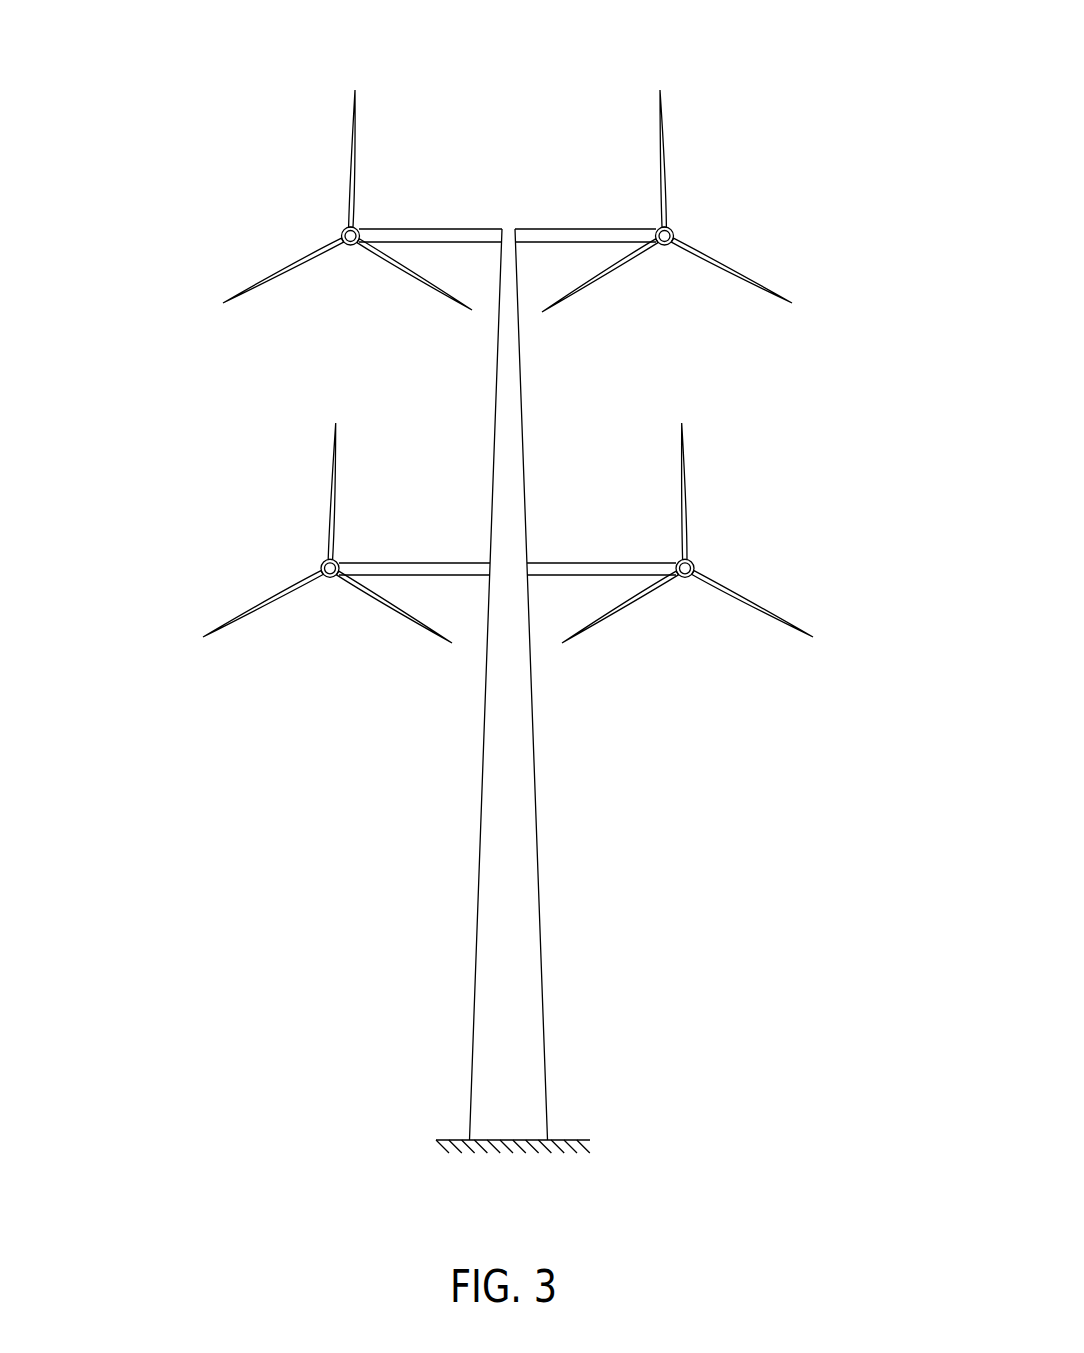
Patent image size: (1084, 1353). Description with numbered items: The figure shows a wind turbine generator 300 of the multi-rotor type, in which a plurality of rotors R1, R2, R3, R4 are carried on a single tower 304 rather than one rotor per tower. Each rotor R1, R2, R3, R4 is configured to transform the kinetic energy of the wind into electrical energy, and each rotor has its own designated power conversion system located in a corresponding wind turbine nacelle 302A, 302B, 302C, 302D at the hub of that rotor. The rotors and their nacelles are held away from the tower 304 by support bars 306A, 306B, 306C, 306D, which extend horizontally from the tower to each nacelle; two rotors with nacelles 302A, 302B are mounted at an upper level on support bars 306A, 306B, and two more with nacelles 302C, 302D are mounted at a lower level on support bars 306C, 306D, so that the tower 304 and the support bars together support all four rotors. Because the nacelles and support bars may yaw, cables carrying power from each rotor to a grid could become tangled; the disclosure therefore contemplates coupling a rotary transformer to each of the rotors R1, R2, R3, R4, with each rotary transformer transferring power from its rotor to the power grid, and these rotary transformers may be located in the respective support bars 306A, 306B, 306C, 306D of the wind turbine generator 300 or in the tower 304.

The wind turbine generator 300 is at (190, 47).
The wind turbine nacelle 302A is at (304, 200).
The wind turbine nacelle 302B is at (731, 195).
The wind turbine nacelle 302C is at (293, 533).
The wind turbine nacelle 302D is at (741, 532).
The tower 304 is at (540, 850).
The support bar 306A is at (497, 244).
The support bar 306B is at (594, 244).
The support bar 306C is at (475, 577).
The support bar 306D is at (615, 577).
The rotor R1 is at (232, 152).
The rotor R2 is at (822, 122).
The rotor R3 is at (232, 497).
The rotor R4 is at (822, 465).